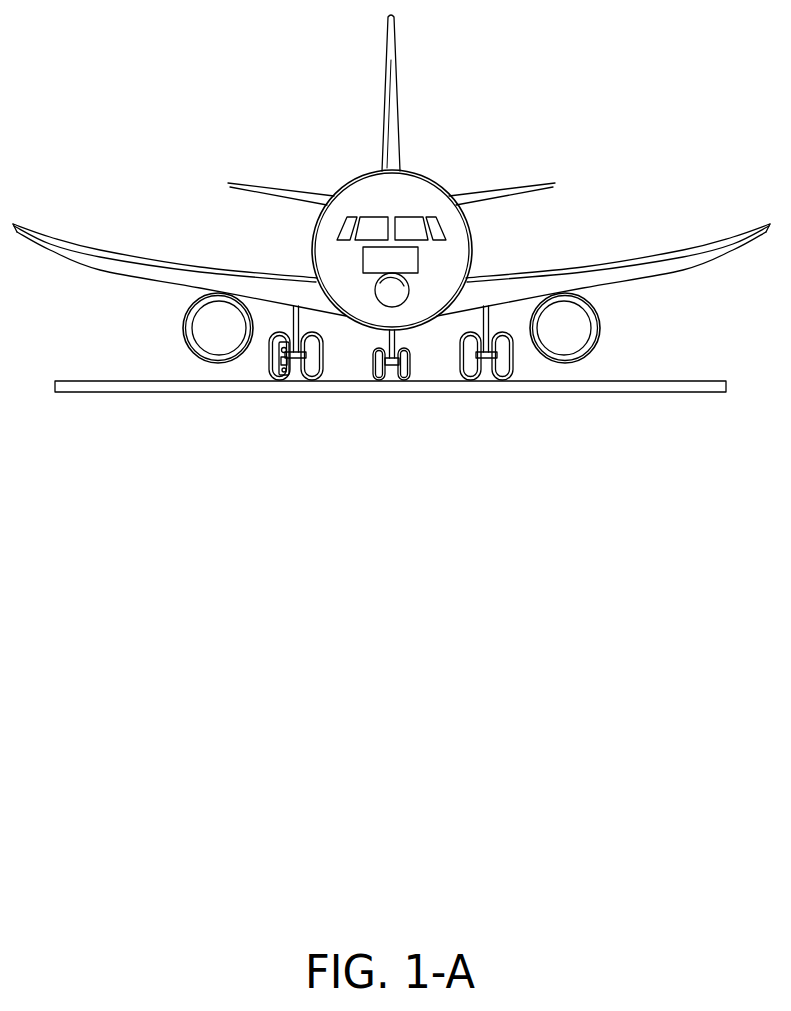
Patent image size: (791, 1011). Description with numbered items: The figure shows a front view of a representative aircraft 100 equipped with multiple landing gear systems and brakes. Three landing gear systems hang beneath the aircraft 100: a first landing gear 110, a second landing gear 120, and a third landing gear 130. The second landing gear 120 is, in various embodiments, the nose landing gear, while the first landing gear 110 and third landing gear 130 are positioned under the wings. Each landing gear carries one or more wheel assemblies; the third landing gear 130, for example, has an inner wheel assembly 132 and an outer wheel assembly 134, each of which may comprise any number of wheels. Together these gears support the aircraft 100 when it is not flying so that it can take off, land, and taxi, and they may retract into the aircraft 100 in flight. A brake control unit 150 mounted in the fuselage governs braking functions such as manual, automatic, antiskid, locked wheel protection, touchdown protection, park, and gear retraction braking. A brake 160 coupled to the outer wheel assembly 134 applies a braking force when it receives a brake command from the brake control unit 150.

The aircraft 100 is at (258, 100).
The first landing gear 110 is at (513, 372).
The second landing gear 120 is at (411, 372).
The third landing gear 130 is at (254, 369).
The inner wheel assembly 132 is at (313, 372).
The outer wheel assembly 134 is at (278, 372).
The brake control unit 150 is at (419, 258).
The brake 160 is at (290, 374).